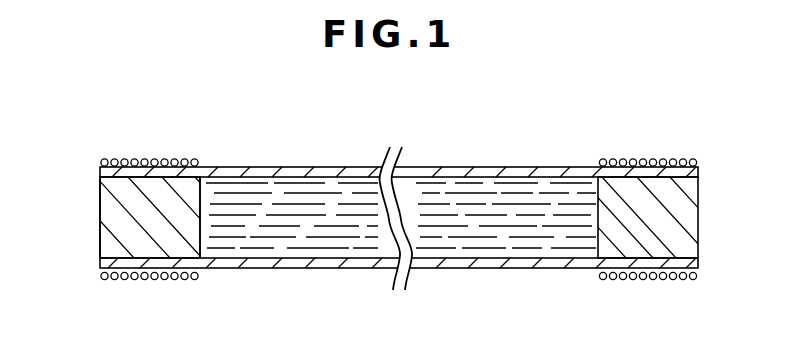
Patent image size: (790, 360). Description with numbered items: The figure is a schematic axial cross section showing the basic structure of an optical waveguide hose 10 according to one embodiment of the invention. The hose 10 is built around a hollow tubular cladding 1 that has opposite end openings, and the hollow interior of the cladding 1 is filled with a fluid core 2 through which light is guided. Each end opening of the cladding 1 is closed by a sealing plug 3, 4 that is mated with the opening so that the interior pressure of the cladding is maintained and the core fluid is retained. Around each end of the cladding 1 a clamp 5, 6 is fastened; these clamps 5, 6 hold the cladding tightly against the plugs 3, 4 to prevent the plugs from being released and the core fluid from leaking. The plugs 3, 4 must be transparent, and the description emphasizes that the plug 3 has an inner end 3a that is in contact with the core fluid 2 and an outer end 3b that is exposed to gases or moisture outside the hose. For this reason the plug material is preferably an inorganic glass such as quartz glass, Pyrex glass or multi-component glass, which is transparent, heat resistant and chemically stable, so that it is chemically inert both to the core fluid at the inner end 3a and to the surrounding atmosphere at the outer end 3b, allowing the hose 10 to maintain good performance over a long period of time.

The optical waveguide hose 10 is at (492, 119).
The hollow tubular cladding 1 is at (305, 168).
The fluid core 2 is at (302, 250).
The sealing plug 3 is at (122, 232).
The inner end of the plug 3a is at (203, 192).
The outer end of the plug 3b is at (100, 188).
The sealing plug 4 is at (687, 216).
The clamp 5 is at (143, 158).
The clamp 6 is at (640, 160).